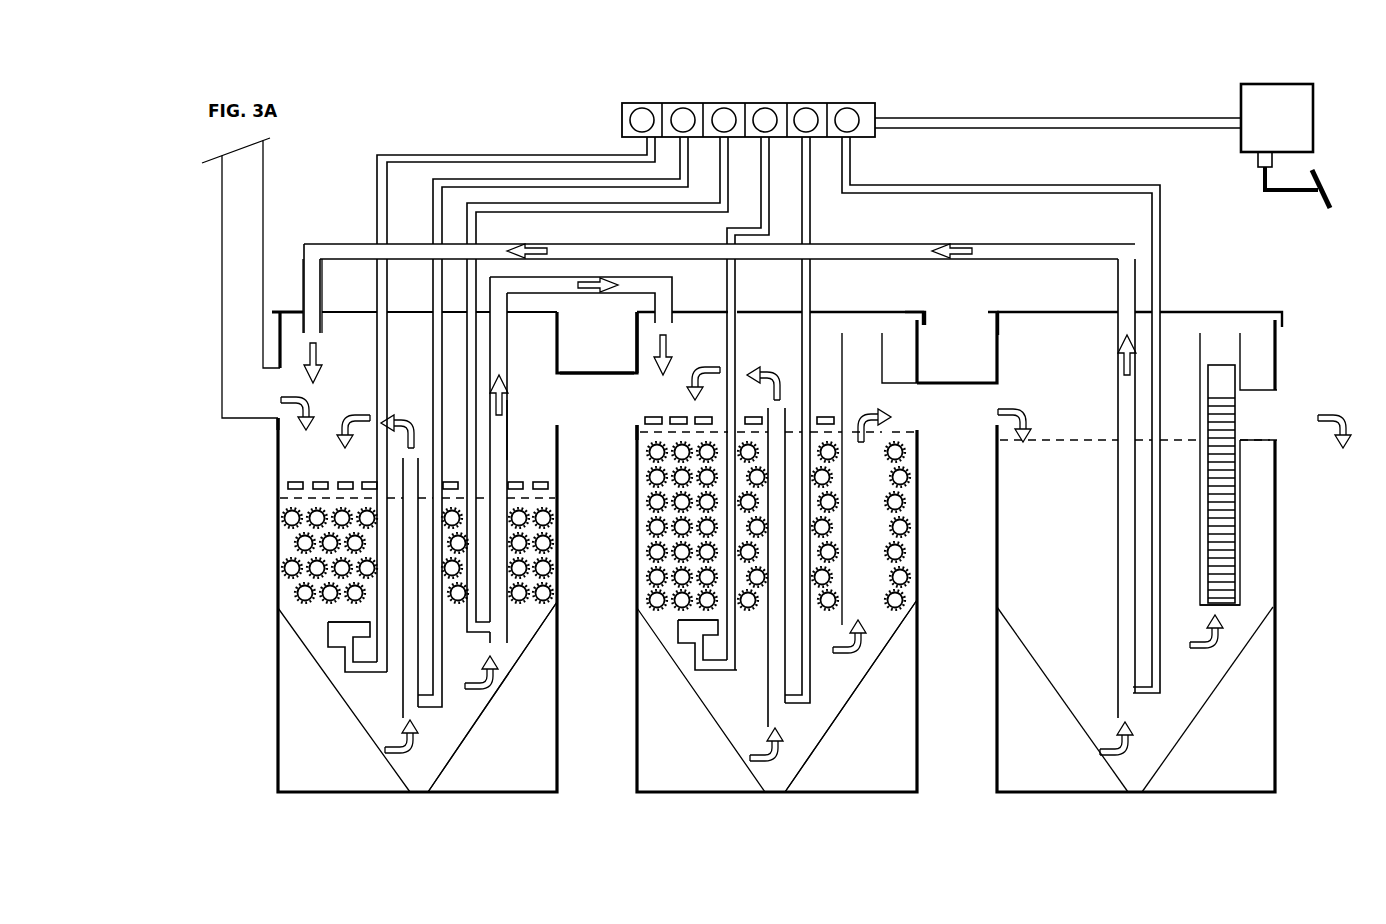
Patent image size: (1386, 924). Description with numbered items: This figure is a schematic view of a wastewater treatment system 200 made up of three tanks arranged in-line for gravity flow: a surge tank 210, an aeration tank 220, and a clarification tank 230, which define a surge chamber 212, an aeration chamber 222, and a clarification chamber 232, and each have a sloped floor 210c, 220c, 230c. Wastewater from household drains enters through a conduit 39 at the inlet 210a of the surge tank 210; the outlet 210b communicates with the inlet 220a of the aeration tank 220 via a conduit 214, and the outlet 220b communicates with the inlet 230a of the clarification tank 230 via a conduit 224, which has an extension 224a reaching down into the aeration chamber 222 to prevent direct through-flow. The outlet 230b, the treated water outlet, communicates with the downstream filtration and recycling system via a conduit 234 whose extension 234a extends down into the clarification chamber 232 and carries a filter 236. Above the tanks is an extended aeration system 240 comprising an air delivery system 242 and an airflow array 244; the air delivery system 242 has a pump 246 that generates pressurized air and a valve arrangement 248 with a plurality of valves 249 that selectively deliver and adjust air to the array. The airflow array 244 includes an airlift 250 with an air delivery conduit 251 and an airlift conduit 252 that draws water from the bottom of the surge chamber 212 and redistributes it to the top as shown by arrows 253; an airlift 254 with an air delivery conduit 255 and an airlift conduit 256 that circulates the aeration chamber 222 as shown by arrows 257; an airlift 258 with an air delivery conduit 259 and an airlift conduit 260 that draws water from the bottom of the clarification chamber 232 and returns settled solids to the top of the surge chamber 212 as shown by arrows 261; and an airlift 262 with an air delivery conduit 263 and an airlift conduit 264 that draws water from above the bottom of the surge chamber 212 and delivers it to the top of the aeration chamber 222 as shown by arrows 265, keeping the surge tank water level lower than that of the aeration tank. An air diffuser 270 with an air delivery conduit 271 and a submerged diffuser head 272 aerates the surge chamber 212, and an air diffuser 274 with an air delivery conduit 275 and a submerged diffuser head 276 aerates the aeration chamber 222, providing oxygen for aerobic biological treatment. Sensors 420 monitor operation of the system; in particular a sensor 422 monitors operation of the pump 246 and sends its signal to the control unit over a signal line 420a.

The wastewater treatment system 200 is at (1168, 67).
The conduit 39 is at (222, 297).
The surge tank 210 is at (315, 802).
The inlet 210a is at (272, 392).
The outlet 210b is at (597, 340).
The sloped floor 210c is at (358, 720).
The surge chamber 212 is at (362, 352).
The conduit 214 is at (600, 362).
The aeration tank 220 is at (672, 802).
The inlet 220a is at (630, 407).
The outlet 220b is at (915, 407).
The sloped floor 220c is at (718, 720).
The aeration chamber 222 is at (785, 351).
The conduit 224 is at (935, 383).
The extension 224a is at (865, 612).
The clarification tank 230 is at (1030, 800).
The inlet 230a is at (997, 398).
The outlet 230b is at (1290, 383).
The sloped floor 230c is at (1075, 720).
The clarification chamber 232 is at (1085, 350).
The conduit 234 is at (1258, 390).
The extension 234a is at (1242, 578).
The filter 236 is at (1225, 515).
The extended aeration system 240 is at (785, 68).
The air delivery system 242 is at (1003, 105).
The airflow array 244 is at (580, 100).
The pump 246 is at (1282, 112).
The valve arrangement 248 is at (802, 98).
The valves 249 is at (685, 123).
The airlift 250 is at (433, 718).
The air delivery conduit 251 is at (450, 177).
The airlift conduit 252 is at (400, 687).
The arrows 253 is at (343, 433).
The airlift 254 is at (802, 713).
The air delivery conduit 255 is at (812, 227).
The airlift conduit 256 is at (768, 677).
The arrows 257 is at (692, 367).
The airlift 258 is at (1152, 712).
The air delivery conduit 259 is at (990, 185).
The airlift conduit 260 is at (1118, 678).
The arrows 261 is at (950, 245).
The airlift 262 is at (513, 628).
The air delivery conduit 263 is at (507, 202).
The airlift conduit 264 is at (508, 440).
The arrows 265 is at (660, 368).
The air diffuser 270 is at (343, 650).
The air delivery conduit 271 is at (385, 152).
The diffuser head 272 is at (347, 630).
The air diffuser 274 is at (687, 647).
The air delivery conduit 275 is at (737, 290).
The diffuser head 276 is at (695, 628).
The sensors 420 is at (1242, 213).
The signal line 420a is at (1297, 200).
The sensor 422 is at (1258, 167).